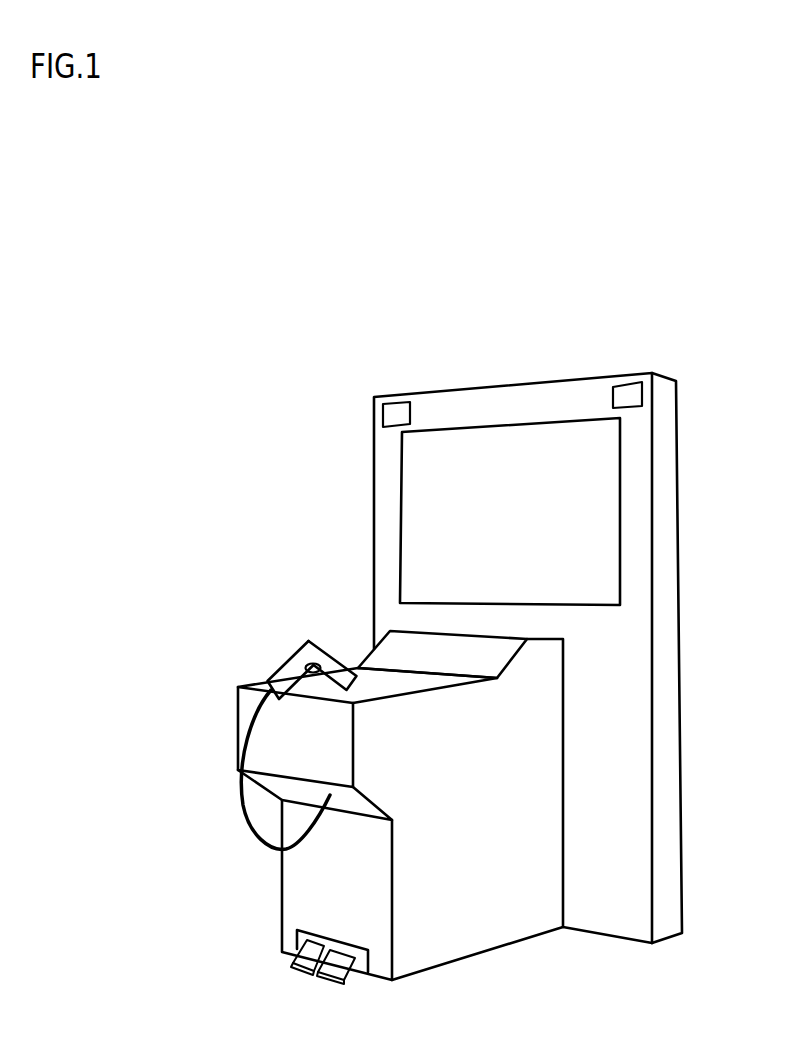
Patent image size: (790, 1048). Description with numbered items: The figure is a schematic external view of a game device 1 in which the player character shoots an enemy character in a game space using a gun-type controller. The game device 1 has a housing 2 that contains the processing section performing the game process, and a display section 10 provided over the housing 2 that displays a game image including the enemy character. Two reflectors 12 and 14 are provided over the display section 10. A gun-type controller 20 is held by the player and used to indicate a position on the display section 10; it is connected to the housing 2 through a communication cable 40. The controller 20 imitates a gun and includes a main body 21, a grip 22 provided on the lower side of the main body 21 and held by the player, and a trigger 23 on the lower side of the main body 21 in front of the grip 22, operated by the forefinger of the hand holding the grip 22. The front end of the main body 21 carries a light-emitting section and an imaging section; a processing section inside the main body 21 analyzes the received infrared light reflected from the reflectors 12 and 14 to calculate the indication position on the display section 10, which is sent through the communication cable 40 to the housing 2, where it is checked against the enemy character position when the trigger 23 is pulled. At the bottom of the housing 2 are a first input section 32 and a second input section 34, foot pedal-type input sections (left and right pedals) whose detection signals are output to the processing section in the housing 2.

The game device 1 is at (677, 319).
The housing 2 is at (542, 913).
The display section 10 is at (494, 426).
The reflector 12 is at (397, 401).
The reflector 14 is at (627, 381).
The gun-type controller 20 is at (286, 635).
The main body 21 is at (329, 657).
The grip 22 is at (279, 669).
The trigger 23 is at (314, 677).
The first input section 32 is at (303, 959).
The second input section 34 is at (333, 969).
The communication cable 40 is at (238, 800).